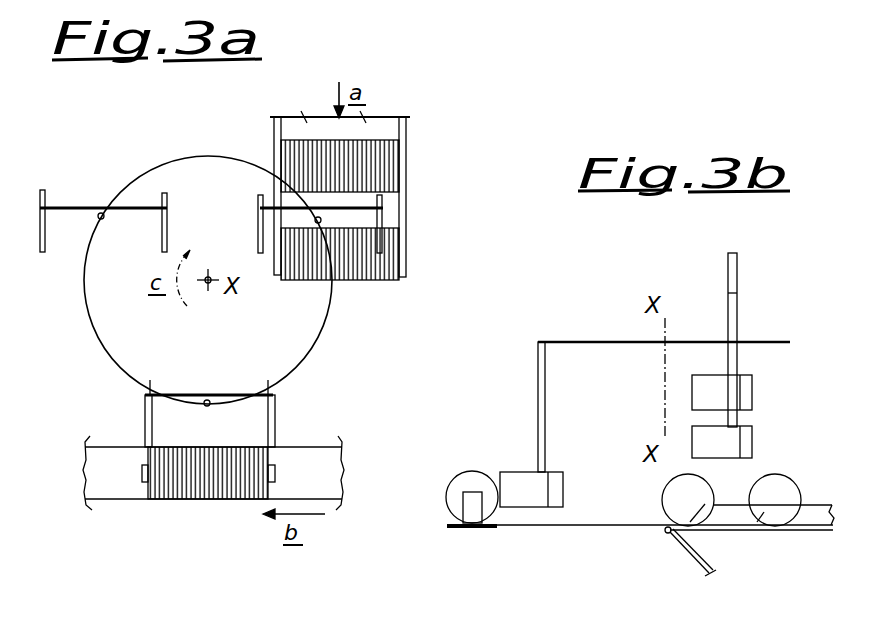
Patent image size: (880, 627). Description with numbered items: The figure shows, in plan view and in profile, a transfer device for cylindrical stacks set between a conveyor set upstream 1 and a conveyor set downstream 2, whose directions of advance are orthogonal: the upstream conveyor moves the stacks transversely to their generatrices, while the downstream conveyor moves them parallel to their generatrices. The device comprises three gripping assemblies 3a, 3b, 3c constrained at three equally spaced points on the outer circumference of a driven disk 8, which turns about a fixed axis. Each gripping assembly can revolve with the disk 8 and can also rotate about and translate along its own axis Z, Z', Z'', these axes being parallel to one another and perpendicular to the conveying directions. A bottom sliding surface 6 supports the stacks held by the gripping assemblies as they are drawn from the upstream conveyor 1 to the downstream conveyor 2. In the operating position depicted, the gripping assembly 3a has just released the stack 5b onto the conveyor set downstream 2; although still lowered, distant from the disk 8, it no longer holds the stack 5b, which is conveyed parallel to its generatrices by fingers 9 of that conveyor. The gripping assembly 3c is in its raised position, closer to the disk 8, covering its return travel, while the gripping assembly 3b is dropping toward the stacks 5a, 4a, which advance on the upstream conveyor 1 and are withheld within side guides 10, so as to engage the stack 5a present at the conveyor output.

In FIG. 3a, the conveyor set upstream 1 is at (393, 128).
In FIG. 3b, the conveyor set upstream 1 is at (800, 538).
In FIG. 3a, the conveyor set downstream 2 is at (92, 497).
In FIG. 3b, the conveyor set downstream 2 is at (468, 530).
In FIG. 3a, the gripping assembly 3a is at (182, 392).
In FIG. 3b, the gripping assembly 3a is at (525, 475).
In FIG. 3a, the gripping assembly 3b is at (365, 208).
In FIG. 3b, the gripping assembly 3b is at (750, 436).
In FIG. 3a, the gripping assembly 3c is at (100, 207).
In FIG. 3b, the gripping assembly 3c is at (750, 390).
In FIG. 3b, the cylindrical stack 4a is at (733, 531).
In FIG. 3a, the cylindrical stack 5a is at (353, 275).
In FIG. 3b, the cylindrical stack 5a is at (667, 497).
In FIG. 3a, the cylindrical stack 5b is at (185, 492).
In FIG. 3b, the cylindrical stack 5b is at (472, 473).
In FIG. 3b, the bottom sliding surface 6 is at (578, 530).
In FIG. 3a, the driven disk 8 is at (94, 322).
In FIG. 3b, the driven disk 8 is at (612, 340).
In FIG. 3b, the fingers 9 is at (462, 496).
In FIG. 3b, the side guides 10 is at (815, 512).
In FIG. 3a, the axis Z is at (214, 378).
In FIG. 3a, the axis Z' is at (378, 248).
In FIG. 3a, the axis Z'' is at (118, 232).